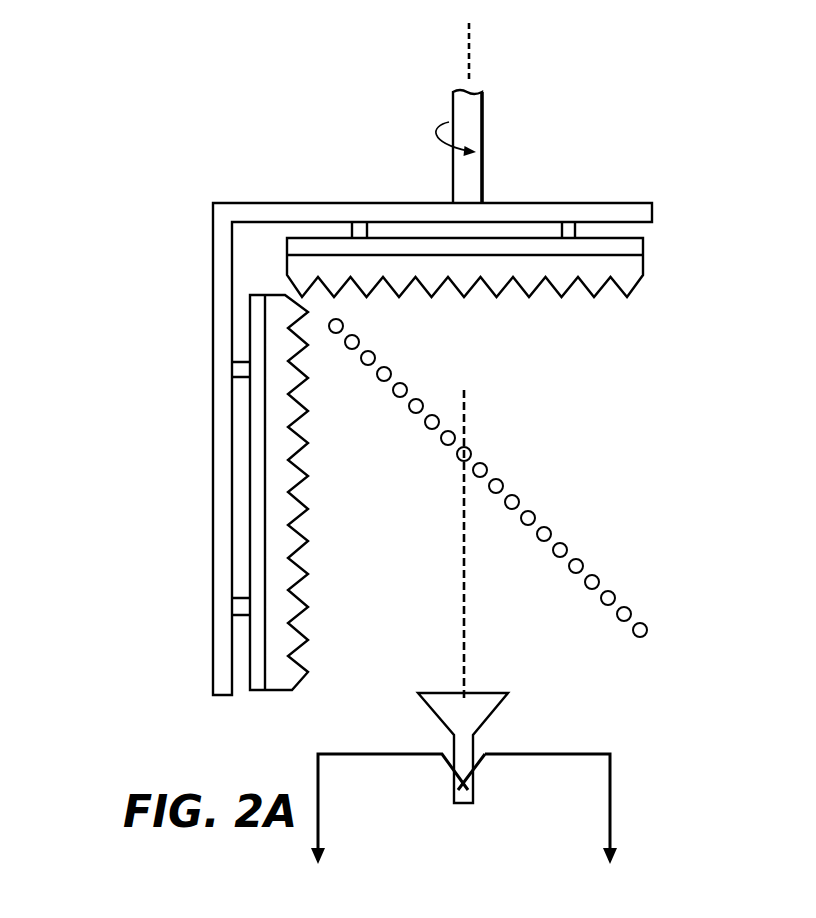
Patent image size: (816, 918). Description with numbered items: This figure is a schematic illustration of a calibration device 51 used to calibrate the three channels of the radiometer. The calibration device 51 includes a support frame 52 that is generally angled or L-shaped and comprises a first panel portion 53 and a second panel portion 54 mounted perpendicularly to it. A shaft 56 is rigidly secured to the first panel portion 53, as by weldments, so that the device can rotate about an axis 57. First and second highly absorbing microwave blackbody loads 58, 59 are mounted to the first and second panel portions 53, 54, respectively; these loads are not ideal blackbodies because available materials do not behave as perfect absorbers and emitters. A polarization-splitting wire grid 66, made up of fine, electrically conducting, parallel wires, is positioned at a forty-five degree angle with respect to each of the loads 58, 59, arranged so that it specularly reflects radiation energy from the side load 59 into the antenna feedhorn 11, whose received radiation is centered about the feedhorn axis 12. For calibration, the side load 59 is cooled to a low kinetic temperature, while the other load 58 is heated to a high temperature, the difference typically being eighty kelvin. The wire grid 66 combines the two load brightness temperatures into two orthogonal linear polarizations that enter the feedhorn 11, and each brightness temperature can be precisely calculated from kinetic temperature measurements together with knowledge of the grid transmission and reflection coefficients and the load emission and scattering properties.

The antenna feedhorn 11 is at (493, 703).
The feedhorn axis 12 is at (468, 408).
The calibration device 51 is at (748, 266).
The support frame 52 is at (224, 194).
The first panel portion 53 is at (605, 207).
The second panel portion 54 is at (220, 523).
The shaft 56 is at (473, 124).
The axis 57 is at (473, 64).
The first blackbody load 58 is at (633, 264).
The second blackbody load 59 is at (292, 678).
The polarization-splitting wire grid 66 is at (572, 538).